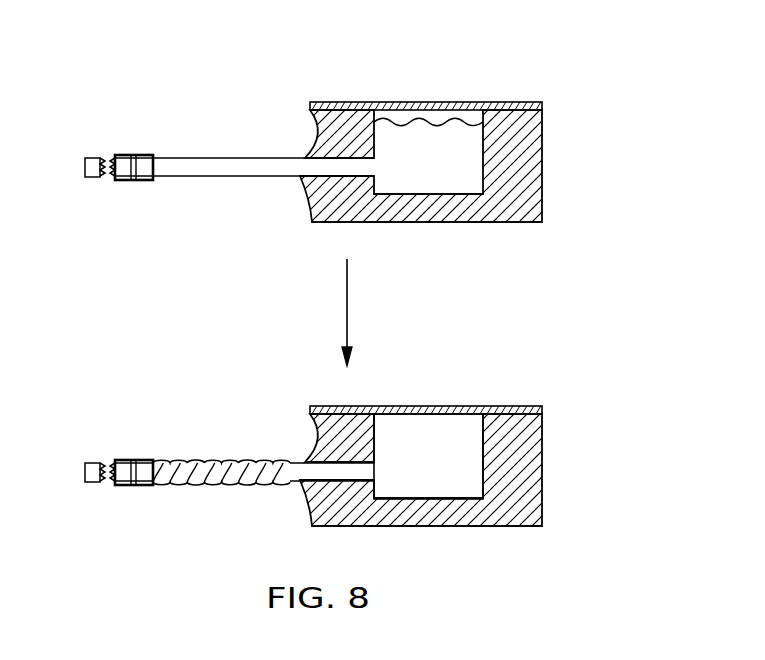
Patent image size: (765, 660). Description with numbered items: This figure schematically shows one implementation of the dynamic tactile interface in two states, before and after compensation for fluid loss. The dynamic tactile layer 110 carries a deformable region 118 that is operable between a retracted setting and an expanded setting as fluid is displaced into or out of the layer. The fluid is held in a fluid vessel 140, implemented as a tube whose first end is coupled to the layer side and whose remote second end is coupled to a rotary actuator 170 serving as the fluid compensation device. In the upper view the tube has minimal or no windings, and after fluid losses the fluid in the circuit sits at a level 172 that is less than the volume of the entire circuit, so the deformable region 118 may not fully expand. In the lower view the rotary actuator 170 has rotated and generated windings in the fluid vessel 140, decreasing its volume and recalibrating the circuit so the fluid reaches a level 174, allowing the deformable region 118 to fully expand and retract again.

The dynamic tactile layer 110 is at (333, 108).
The deformable region 118 is at (416, 102).
The fluid vessel 140 is at (217, 167).
The rotary actuator 170 is at (92, 165).
The fluid level 172 is at (457, 123).
The fluid level 174 is at (466, 422).